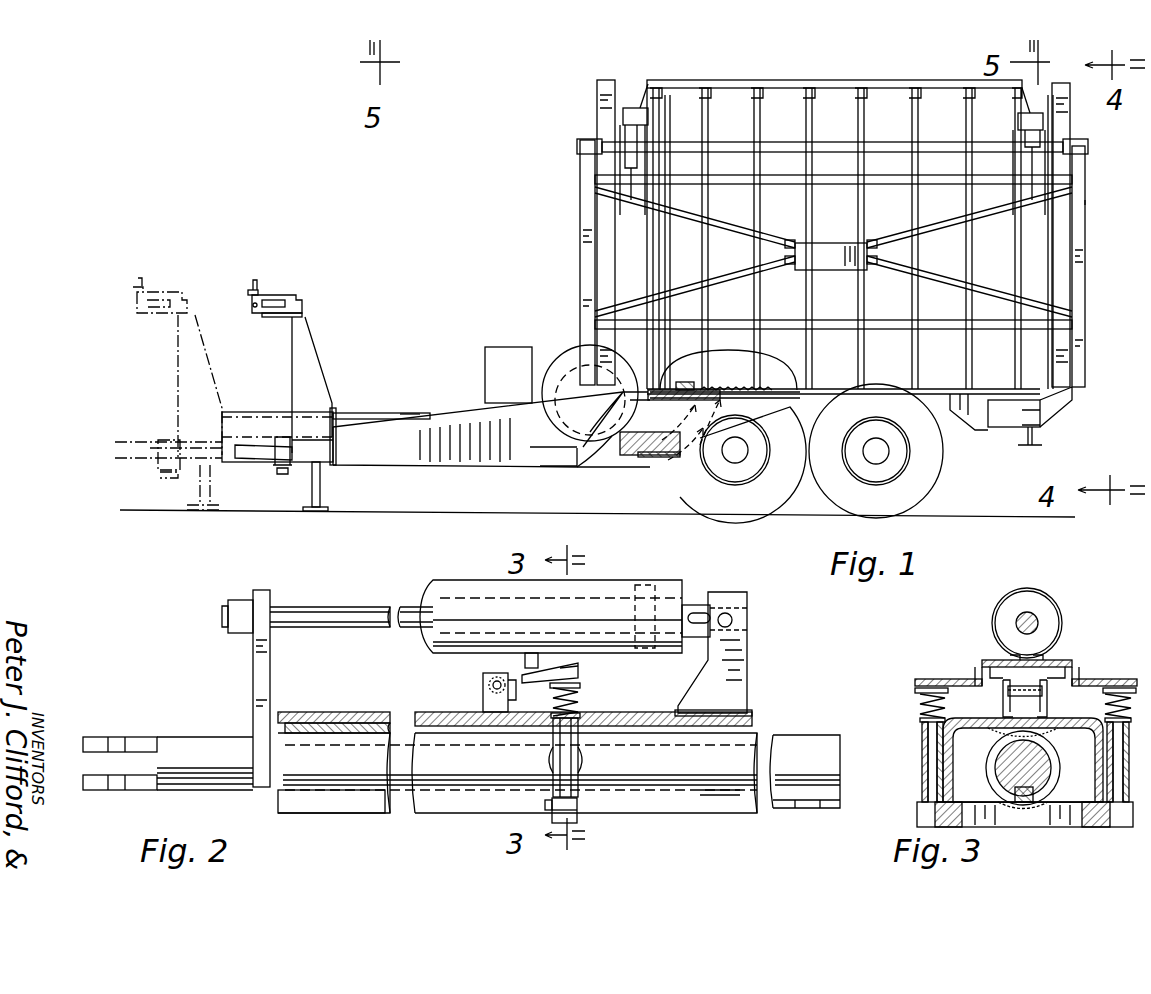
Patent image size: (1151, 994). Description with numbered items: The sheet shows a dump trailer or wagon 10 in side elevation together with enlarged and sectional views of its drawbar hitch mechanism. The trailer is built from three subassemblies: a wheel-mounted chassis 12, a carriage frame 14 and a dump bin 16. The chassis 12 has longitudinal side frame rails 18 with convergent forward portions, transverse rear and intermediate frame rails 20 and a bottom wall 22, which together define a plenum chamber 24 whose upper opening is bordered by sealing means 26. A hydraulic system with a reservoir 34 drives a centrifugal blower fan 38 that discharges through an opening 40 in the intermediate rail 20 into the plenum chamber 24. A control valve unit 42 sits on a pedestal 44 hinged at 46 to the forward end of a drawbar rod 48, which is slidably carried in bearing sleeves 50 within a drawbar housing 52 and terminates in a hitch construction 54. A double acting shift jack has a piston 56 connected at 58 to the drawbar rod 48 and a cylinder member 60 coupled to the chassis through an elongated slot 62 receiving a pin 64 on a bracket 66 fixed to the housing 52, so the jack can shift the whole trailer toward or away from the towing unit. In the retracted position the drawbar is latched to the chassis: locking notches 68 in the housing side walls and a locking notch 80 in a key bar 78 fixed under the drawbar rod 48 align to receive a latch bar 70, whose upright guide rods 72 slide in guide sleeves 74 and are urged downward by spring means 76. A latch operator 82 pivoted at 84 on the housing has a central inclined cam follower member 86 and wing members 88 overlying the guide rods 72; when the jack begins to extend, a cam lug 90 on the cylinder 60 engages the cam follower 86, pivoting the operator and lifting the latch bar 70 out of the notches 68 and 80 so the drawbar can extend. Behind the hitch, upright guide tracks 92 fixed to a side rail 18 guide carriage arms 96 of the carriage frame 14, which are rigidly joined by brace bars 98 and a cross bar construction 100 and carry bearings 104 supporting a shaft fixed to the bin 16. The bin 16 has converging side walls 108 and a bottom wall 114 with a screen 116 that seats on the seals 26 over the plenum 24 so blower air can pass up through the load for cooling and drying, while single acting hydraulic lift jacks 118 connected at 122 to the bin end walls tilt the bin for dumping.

In FIG. 1, the dump trailer or wagon 10 is at (476, 390).
In FIG. 1, the wheel-mounted chassis 12 is at (470, 464).
In FIG. 1, the carriage frame 14 is at (1089, 201).
In FIG. 1, the dump bin 16 is at (743, 78).
In FIG. 1, the side frame rails 18 is at (538, 467).
In FIG. 1, the rear and intermediate frame rails 20 is at (1042, 417).
In FIG. 1, the bottom wall 22 is at (945, 450).
In FIG. 1, the plenum chamber 24 is at (720, 457).
In FIG. 1, the sealing means 26 is at (982, 432).
In FIG. 1, the reservoir 34 is at (508, 347).
In FIG. 1, the centrifugal blower fan 38 is at (573, 354).
In FIG. 1, the opening 40 is at (658, 457).
In FIG. 1, the control valve unit 42 is at (296, 296).
In FIG. 1, the pedestal 44 is at (316, 357).
In FIG. 1, the hinge connection 46 is at (298, 460).
In FIG. 1, the drawbar rod 48 is at (323, 468).
In FIG. 2, the drawbar rod 48 is at (208, 748).
In FIG. 2, the bearing sleeves 50 is at (348, 715).
In FIG. 3, the bearing sleeves 50 is at (1058, 754).
In FIG. 2, the drawbar housing 52 is at (394, 715).
In FIG. 3, the drawbar housing 52 is at (1060, 730).
In FIG. 1, the hitch construction 54 is at (268, 460).
In FIG. 2, the hitch construction 54 is at (143, 737).
In FIG. 1, the piston 56 is at (388, 413).
In FIG. 2, the piston 56 is at (393, 607).
In FIG. 3, the piston 56 is at (1020, 615).
In FIG. 1, the piston connection 58 is at (336, 412).
In FIG. 2, the piston connection 58 is at (253, 664).
In FIG. 2, the cylinder member 60 is at (653, 587).
In FIG. 3, the cylinder member 60 is at (1053, 602).
In FIG. 2, the elongated slot 62 is at (693, 620).
In FIG. 2, the pin 64 is at (732, 620).
In FIG. 2, the bracket 66 is at (747, 674).
In FIG. 2, the locking notches 68 is at (545, 806).
In FIG. 3, the locking notches 68 is at (958, 802).
In FIG. 2, the latch bar 70 is at (578, 820).
In FIG. 3, the latch bar 70 is at (1066, 812).
In FIG. 2, the guide rods 72 is at (583, 716).
In FIG. 3, the guide rods 72 is at (920, 722).
In FIG. 2, the guide sleeves 74 is at (553, 746).
In FIG. 3, the guide sleeves 74 is at (920, 787).
In FIG. 2, the spring means 76 is at (580, 702).
In FIG. 3, the spring means 76 is at (918, 707).
In FIG. 2, the key bar 78 is at (710, 812).
In FIG. 3, the key bar 78 is at (1023, 768).
In FIG. 2, the locking notch 80 is at (551, 784).
In FIG. 3, the locking notch 80 is at (1040, 796).
In FIG. 2, the latch operator 82 is at (498, 694).
In FIG. 3, the latch operator 82 is at (1006, 692).
In FIG. 2, the pivot mounting 84 is at (483, 692).
In FIG. 3, the pivot mounting 84 is at (1043, 687).
In FIG. 2, the cam follower member 86 is at (558, 674).
In FIG. 3, the cam follower member 86 is at (998, 660).
In FIG. 2, the wing members 88 is at (560, 668).
In FIG. 3, the wing members 88 is at (960, 678).
In FIG. 2, the cam lug 90 is at (525, 662).
In FIG. 3, the cam lug 90 is at (1043, 664).
In FIG. 1, the guide tracks 92 is at (597, 94).
In FIG. 1, the carriage arms 96 is at (580, 214).
In FIG. 1, the brace bars 98 is at (905, 187).
In FIG. 1, the cross bar construction 100 is at (950, 277).
In FIG. 1, the bearings 104 is at (577, 140).
In FIG. 1, the side walls 108 is at (870, 95).
In FIG. 1, the bottom wall 114 is at (666, 382).
In FIG. 1, the screen 116 is at (766, 390).
In FIG. 1, the hydraulic lift jacks 118 is at (628, 262).
In FIG. 1, the piston pivot connections 122 is at (623, 108).